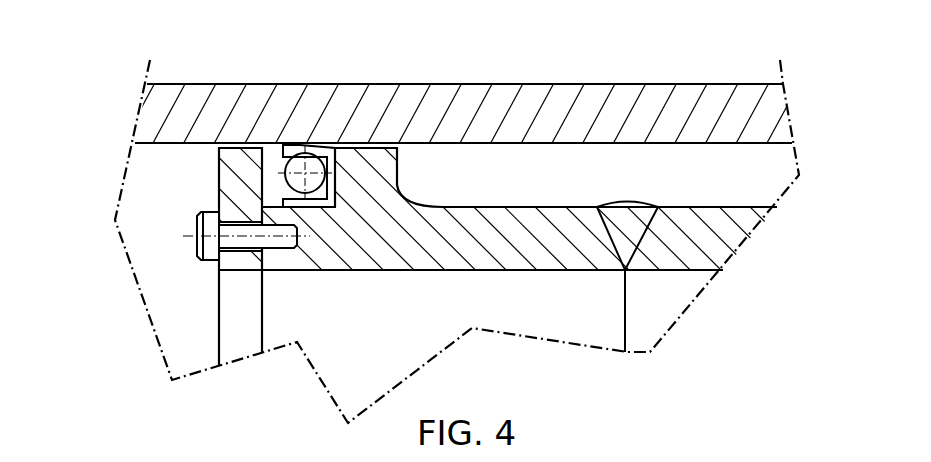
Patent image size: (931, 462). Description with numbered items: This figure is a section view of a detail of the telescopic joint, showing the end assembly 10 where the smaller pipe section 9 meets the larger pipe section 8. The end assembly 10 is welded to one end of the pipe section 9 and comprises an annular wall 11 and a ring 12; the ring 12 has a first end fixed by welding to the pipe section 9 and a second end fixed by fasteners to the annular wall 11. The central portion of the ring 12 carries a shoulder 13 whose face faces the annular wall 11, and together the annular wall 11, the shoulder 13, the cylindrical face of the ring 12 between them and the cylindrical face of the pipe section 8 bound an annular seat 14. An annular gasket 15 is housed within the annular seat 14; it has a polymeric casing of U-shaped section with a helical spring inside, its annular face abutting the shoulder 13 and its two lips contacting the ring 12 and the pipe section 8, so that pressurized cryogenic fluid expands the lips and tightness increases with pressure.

The pipe section 8 is at (613, 102).
The pipe section 9 is at (723, 242).
The end assembly 10 is at (455, 282).
The annular wall 11 is at (233, 190).
The ring 12 is at (475, 207).
The shoulder 13 is at (362, 158).
The annular seat 14 is at (273, 157).
The annular gasket 15 is at (297, 185).